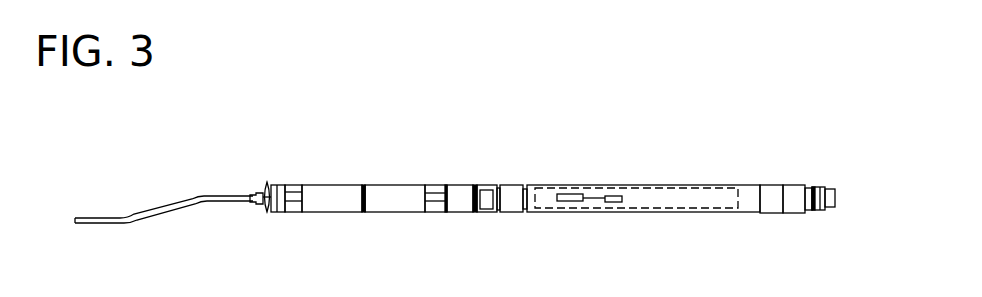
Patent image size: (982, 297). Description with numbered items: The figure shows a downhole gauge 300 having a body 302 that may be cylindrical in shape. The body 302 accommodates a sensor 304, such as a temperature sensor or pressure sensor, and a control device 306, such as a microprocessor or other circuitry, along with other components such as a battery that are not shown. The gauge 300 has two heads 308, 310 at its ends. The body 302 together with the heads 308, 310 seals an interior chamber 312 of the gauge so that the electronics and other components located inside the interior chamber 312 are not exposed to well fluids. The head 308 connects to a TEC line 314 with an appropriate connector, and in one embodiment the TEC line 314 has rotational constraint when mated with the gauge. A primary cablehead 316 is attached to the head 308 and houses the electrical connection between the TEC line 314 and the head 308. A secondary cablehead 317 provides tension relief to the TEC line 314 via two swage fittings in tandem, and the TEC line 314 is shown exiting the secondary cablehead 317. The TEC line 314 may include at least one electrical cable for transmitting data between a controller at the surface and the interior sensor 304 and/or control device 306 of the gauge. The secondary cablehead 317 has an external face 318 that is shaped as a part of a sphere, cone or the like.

The downhole gauge 300 is at (504, 93).
The body 302 is at (613, 186).
The sensor 304 is at (573, 194).
The control device 306 is at (616, 203).
The head 308 is at (483, 185).
The head 310 is at (807, 186).
The interior chamber 312 is at (697, 200).
The TEC line 314 is at (140, 213).
The primary cablehead 316 is at (388, 185).
The secondary cablehead 317 is at (330, 213).
The external face 318 is at (267, 183).